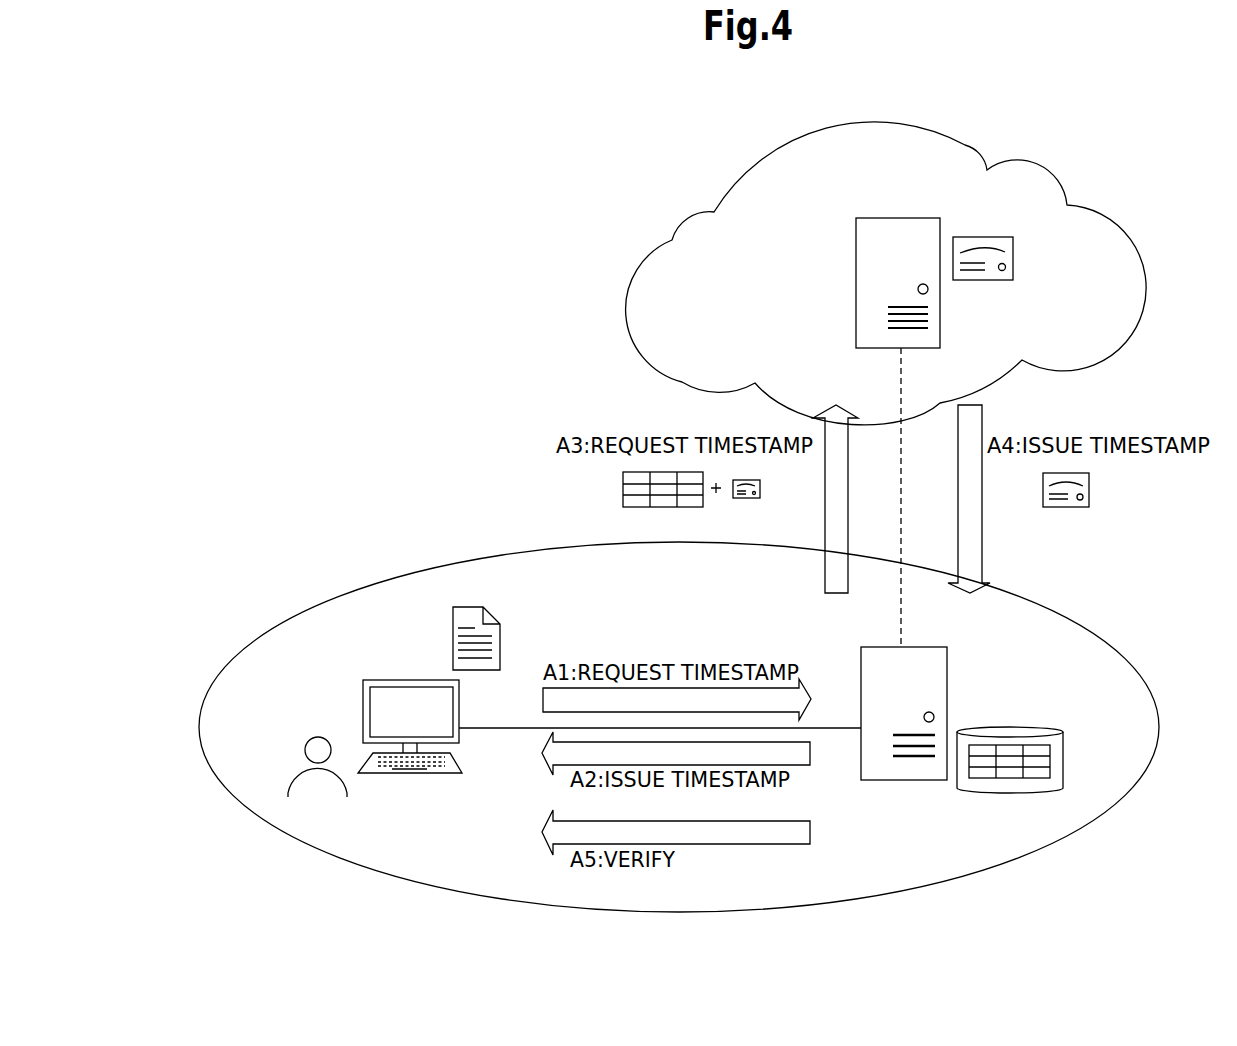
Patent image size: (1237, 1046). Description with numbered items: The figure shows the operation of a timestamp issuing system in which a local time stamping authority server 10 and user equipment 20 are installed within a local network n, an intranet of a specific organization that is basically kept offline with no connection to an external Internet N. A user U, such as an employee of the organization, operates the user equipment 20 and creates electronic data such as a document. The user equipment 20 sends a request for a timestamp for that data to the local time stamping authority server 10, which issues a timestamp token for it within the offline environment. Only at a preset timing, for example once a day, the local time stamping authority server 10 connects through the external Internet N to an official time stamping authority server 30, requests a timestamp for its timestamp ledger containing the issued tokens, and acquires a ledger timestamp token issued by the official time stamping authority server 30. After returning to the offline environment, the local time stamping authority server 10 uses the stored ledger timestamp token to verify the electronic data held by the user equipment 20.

The external Internet N is at (965, 145).
The official time stamping authority server 30 is at (920, 218).
The local time stamping authority server 10 is at (917, 647).
The user equipment 20 is at (403, 680).
The user U is at (317, 737).
The local network n is at (1020, 593).